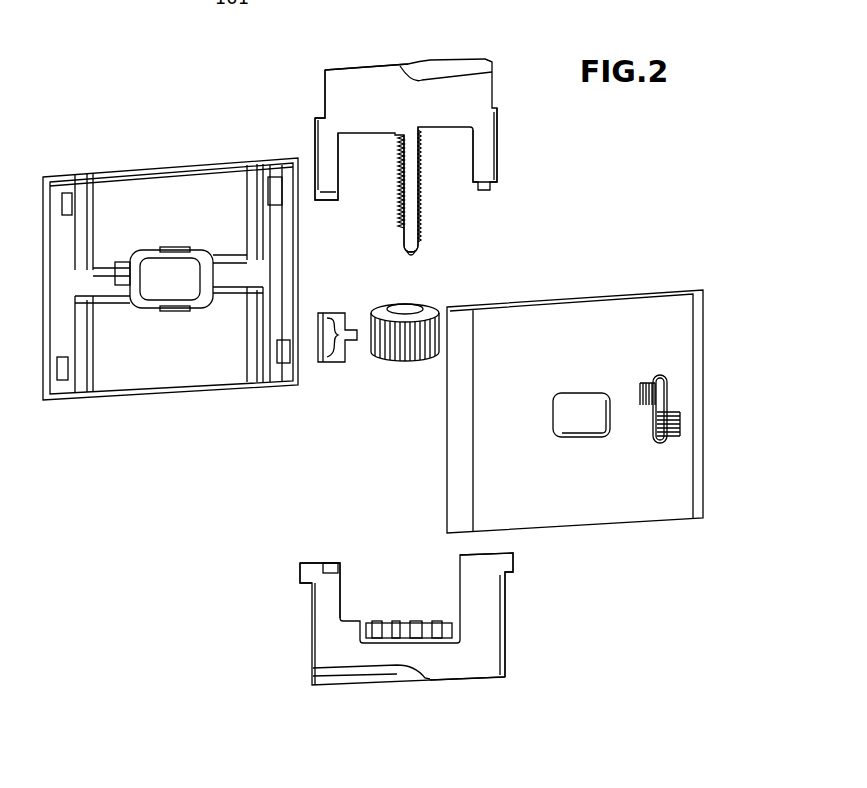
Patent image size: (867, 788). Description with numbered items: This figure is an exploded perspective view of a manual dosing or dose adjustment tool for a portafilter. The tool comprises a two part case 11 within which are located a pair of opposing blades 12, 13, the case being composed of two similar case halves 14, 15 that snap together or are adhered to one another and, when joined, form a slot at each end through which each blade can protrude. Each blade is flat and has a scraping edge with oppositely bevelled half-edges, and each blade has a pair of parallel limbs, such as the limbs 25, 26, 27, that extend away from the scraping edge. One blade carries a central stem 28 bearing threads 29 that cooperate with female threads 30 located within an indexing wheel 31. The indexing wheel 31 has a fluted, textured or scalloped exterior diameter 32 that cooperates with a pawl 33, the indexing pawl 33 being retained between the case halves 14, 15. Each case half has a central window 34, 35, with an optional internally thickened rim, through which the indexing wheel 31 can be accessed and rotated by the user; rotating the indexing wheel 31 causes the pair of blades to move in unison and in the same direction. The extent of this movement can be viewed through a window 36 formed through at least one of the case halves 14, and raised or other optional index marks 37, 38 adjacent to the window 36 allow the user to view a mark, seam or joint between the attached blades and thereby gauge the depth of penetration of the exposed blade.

The two part case 11 is at (677, 267).
The blade 12 is at (483, 627).
The blade 13 is at (470, 90).
The case half 14 is at (588, 320).
The case half 15 is at (162, 192).
The limb 25 is at (490, 163).
The limb 26 is at (322, 599).
The limb 27 is at (485, 608).
The central stem 28 is at (407, 203).
The threads 29 is at (422, 173).
The female threads 30 is at (408, 305).
The indexing wheel 31 is at (390, 340).
The fluted exterior diameter 32 is at (413, 345).
The pawl 33 is at (337, 363).
The central window 34 is at (163, 277).
The central window 35 is at (588, 408).
The window 36 is at (667, 405).
The index mark 37 is at (670, 440).
The index mark 38 is at (667, 387).